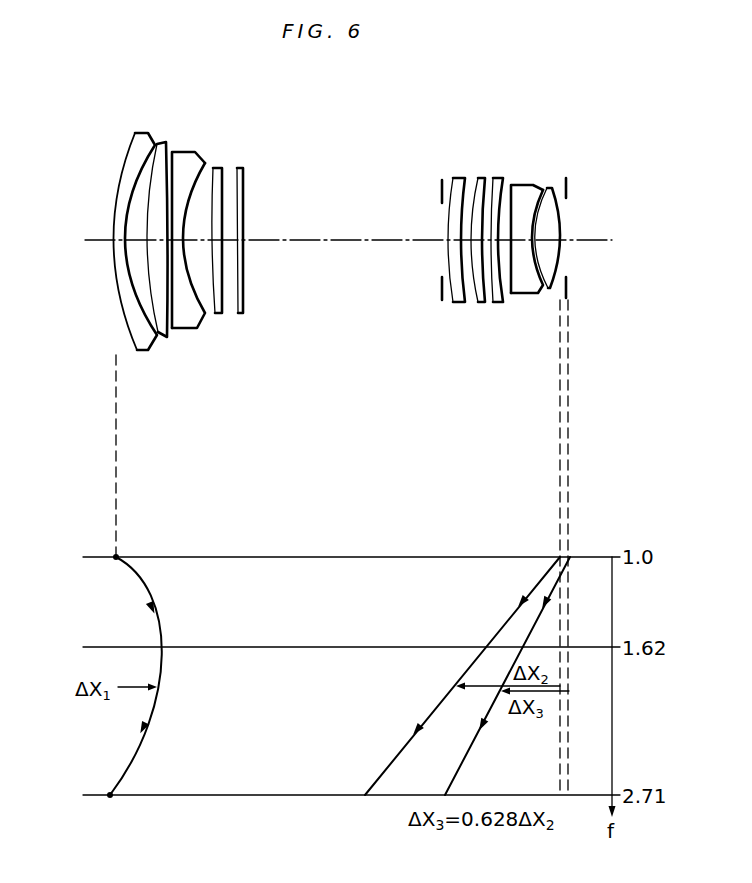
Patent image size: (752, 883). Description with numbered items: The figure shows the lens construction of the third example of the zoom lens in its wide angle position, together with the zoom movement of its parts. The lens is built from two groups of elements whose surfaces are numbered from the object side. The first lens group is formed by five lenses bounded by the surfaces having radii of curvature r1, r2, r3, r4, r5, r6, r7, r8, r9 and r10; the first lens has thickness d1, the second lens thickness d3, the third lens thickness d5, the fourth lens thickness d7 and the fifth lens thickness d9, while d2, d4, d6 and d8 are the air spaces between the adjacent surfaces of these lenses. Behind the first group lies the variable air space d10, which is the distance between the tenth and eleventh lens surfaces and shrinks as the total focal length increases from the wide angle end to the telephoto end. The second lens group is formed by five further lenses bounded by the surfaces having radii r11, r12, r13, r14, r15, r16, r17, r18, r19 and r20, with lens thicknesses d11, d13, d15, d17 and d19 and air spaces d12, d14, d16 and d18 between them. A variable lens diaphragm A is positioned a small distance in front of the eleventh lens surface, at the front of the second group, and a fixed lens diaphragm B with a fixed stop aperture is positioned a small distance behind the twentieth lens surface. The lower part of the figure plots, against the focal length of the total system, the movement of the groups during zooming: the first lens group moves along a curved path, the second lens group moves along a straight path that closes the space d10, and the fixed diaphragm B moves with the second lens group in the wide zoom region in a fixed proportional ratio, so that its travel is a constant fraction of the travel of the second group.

The radius of curvature of the first lens surface r1 is at (136, 134).
The radius of curvature of the second lens surface r2 is at (155, 144).
The radius of curvature of the third lens surface r3 is at (157, 144).
The radius of curvature of the fourth lens surface r4 is at (167, 150).
The radius of curvature of the fifth lens surface r5 is at (174, 152).
The radius of curvature of the sixth lens surface r6 is at (205, 165).
The radius of curvature of the seventh lens surface r7 is at (214, 167).
The radius of curvature of the eighth lens surface r8 is at (222, 167).
The radius of curvature of the ninth lens surface r9 is at (238, 167).
The radius of curvature of the tenth lens surface r10 is at (243, 167).
The radius of curvature of the eleventh lens surface r11 is at (450, 177).
The radius of curvature of the twelfth lens surface r12 is at (463, 177).
The radius of curvature of the thirteenth lens surface r13 is at (474, 177).
The radius of curvature of the fourteenth lens surface r14 is at (484, 177).
The radius of curvature of the fifteenth lens surface r15 is at (492, 177).
The radius of curvature of the sixteenth lens surface r16 is at (502, 178).
The radius of curvature of the seventeenth lens surface r17 is at (512, 184).
The radius of curvature of the eighteenth lens surface r18 is at (542, 190).
The radius of curvature of the nineteenth lens surface r19 is at (547, 187).
The radius of curvature of the twentieth lens surface r20 is at (551, 188).
The thickness of the first lens d1 is at (119, 236).
The space between the second and third lens surfaces d2 is at (132, 240).
The thickness of the second lens d3 is at (158, 242).
The space between the fourth and fifth lens surfaces d4 is at (170, 242).
The thickness of the third lens d5 is at (222, 316).
The space between the sixth and seventh lens surfaces d6 is at (200, 244).
The thickness of the fourth lens d7 is at (218, 244).
The space between the eighth and ninth lens surfaces d8 is at (230, 243).
The thickness of the fifth lens d9 is at (241, 240).
The variable space between the first and second lens groups d10 is at (330, 241).
The thickness of the sixth lens d11 is at (456, 243).
The space between the twelfth and thirteenth lens surfaces d12 is at (467, 243).
The thickness of the seventh lens d13 is at (478, 243).
The space between the fourteenth and fifteenth lens surfaces d14 is at (489, 243).
The thickness of the eighth lens d15 is at (496, 243).
The space between the sixteenth and seventeenth lens surfaces d16 is at (508, 243).
The thickness of the ninth lens d17 is at (521, 243).
The space between the eighteenth and nineteenth lens surfaces d18 is at (534, 243).
The thickness of the tenth lens d19 is at (548, 243).
The variable lens diaphragm A is at (440, 186).
The fixed lens diaphragm B is at (568, 192).